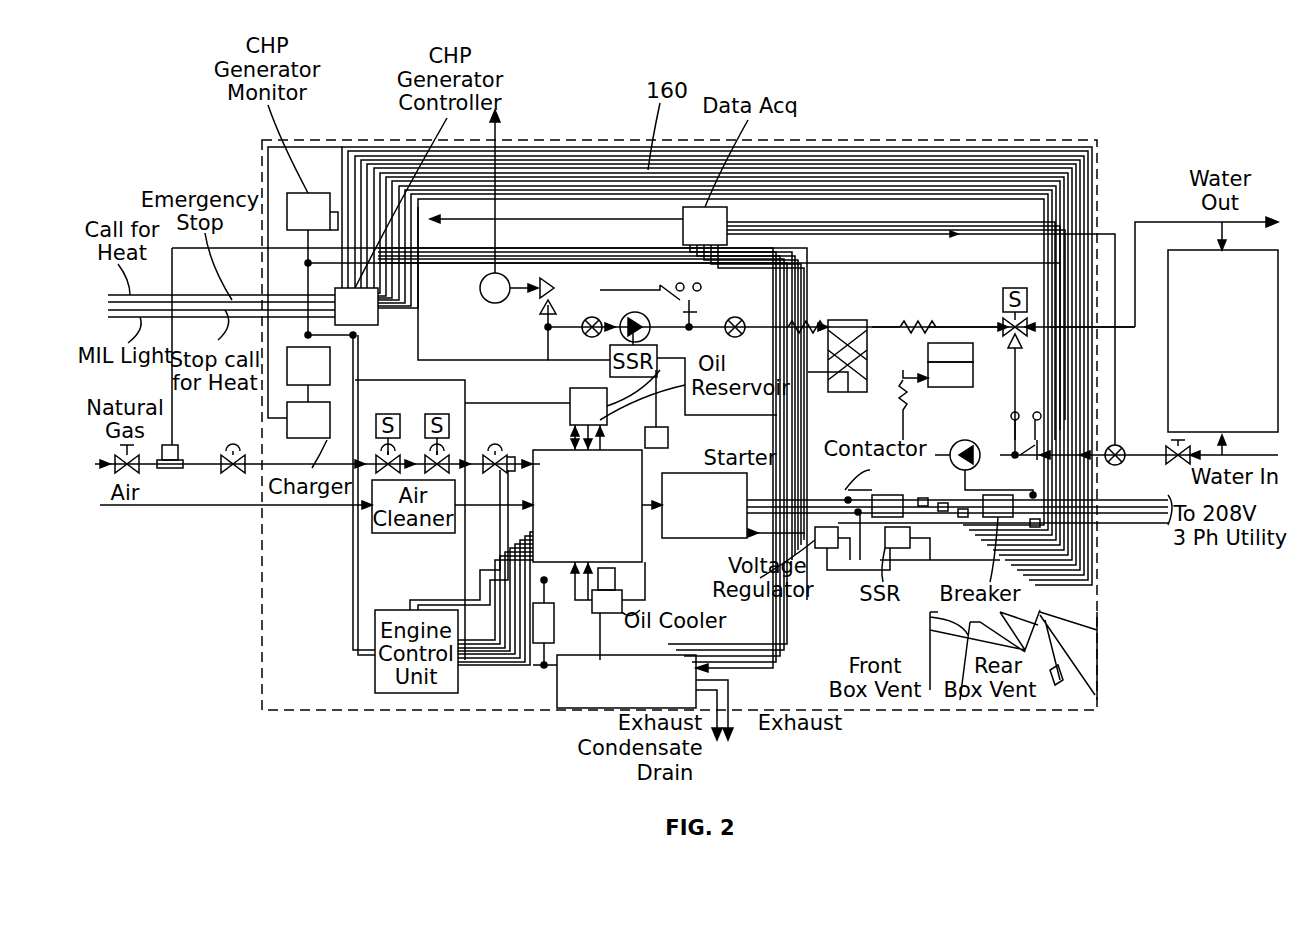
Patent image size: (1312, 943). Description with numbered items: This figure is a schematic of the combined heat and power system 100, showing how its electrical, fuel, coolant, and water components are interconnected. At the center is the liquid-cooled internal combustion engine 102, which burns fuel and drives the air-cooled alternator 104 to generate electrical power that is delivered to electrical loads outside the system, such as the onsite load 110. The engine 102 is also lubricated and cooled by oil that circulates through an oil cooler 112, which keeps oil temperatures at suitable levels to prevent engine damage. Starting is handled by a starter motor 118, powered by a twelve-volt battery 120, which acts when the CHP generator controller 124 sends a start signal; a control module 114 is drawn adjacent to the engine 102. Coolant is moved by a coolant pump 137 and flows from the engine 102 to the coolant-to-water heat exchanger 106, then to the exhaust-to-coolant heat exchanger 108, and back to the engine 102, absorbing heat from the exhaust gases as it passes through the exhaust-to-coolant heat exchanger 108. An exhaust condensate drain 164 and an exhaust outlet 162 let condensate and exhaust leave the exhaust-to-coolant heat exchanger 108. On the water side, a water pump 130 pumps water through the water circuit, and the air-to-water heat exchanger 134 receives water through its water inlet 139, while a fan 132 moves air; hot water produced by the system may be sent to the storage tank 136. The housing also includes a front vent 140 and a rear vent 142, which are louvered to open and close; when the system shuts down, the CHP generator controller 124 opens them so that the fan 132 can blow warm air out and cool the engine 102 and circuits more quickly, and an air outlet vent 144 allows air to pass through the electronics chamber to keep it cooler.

The combined heat and power system 100 is at (1212, 95).
The liquid-cooled internal combustion engine 102 is at (587, 506).
The air-cooled alternator 104 is at (672, 538).
The coolant-to-water heat exchanger 106 is at (848, 320).
The exhaust-to-coolant heat exchanger 108 is at (570, 708).
The onsite load 110 is at (540, 643).
The oil cooler 112 is at (610, 585).
The engine control module 114 is at (570, 406).
The starter motor 118 is at (668, 437).
The 12V battery 120 is at (428, 322).
The CHP generator controller 124 is at (378, 292).
The water pump 130 is at (628, 312).
The fan 132 is at (945, 343).
The air-to-water heat exchanger 134 is at (948, 387).
The storage tank 136 is at (1195, 250).
The coolant pump 137 is at (952, 462).
The water inlet 139 is at (1027, 300).
The front vent 140 is at (932, 690).
The rear vent 142 is at (1078, 690).
The air outlet vent 144 is at (287, 205).
The exhaust outlet 162 is at (740, 740).
The exhaust condensate drain 164 is at (720, 745).